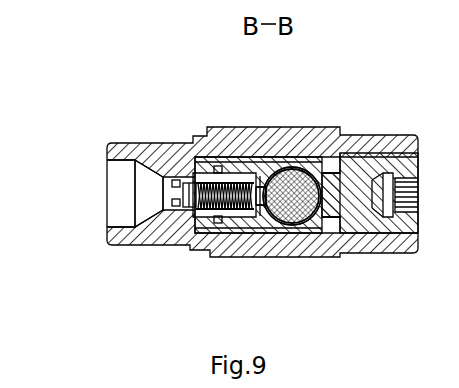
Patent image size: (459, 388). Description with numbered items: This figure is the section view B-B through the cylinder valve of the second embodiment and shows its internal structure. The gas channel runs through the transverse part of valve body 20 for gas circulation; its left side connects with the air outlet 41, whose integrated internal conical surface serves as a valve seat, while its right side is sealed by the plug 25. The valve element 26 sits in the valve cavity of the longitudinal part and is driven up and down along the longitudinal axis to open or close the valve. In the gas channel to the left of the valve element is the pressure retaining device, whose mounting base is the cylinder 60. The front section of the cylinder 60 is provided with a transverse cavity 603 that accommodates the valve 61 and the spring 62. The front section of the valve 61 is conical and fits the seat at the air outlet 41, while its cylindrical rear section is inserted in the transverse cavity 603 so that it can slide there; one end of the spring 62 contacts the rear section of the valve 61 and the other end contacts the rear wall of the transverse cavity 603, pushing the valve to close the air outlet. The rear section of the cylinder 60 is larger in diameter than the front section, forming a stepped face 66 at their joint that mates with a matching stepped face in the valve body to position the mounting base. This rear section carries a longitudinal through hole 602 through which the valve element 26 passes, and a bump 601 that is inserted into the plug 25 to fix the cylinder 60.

The transverse part of valve body 20 is at (180, 143).
The plug 25 is at (365, 140).
The valve element 26 is at (278, 140).
The air outlet 41 is at (122, 188).
The cylinder 60 is at (215, 140).
The valve 61 is at (188, 212).
The spring 62 is at (195, 247).
The stepped face 66 is at (247, 140).
The bump 601 is at (330, 140).
The through hole 602 is at (360, 293).
The transverse cavity 603 is at (293, 293).